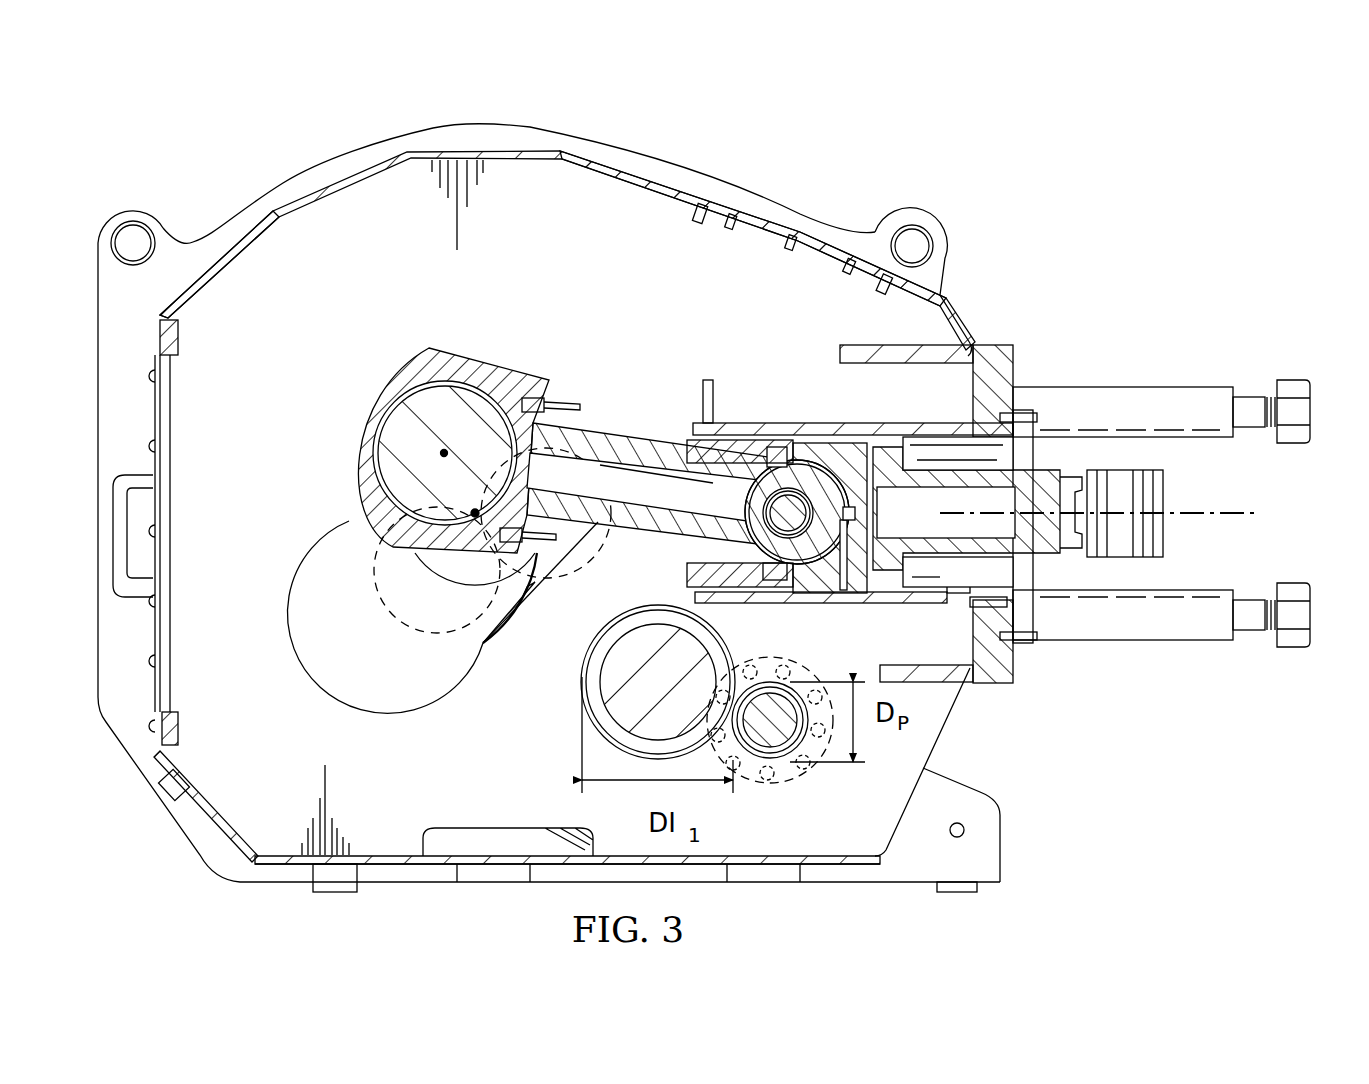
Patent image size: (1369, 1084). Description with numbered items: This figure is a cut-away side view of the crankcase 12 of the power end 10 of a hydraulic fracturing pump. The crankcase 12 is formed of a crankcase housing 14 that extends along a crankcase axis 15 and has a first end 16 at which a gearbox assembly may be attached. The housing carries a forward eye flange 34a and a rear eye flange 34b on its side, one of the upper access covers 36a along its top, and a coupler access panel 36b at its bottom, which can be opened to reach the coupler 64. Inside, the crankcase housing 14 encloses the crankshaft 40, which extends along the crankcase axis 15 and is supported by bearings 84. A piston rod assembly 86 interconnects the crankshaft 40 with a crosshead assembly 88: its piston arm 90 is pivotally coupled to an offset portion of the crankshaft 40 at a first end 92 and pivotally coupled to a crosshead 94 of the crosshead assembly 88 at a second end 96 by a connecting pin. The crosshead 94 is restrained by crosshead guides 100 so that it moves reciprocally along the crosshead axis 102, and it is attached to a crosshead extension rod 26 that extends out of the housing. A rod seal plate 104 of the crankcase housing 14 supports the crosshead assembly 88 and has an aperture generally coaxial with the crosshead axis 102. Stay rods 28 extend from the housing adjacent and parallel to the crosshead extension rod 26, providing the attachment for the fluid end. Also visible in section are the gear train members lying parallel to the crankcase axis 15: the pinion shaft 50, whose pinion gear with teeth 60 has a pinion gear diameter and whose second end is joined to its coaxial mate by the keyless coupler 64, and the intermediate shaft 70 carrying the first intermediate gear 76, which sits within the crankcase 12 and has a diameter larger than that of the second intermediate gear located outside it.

The power end 10 is at (228, 112).
The crankcase 12 is at (347, 168).
The crankcase housing 14 is at (465, 150).
The crankcase axis 15 is at (475, 513).
The first end 16 is at (678, 186).
The crosshead extension rod 26 is at (1168, 490).
The stay rods 28 is at (1148, 386).
The forward eye flange 34a is at (910, 248).
The rear eye flange 34b is at (133, 243).
The upper access cover 36a is at (797, 228).
The coupler access panel 36b is at (975, 743).
The crankshaft 40 is at (352, 603).
The pinion shaft 50 is at (780, 700).
The teeth 60 is at (768, 682).
The coupler 64 is at (805, 782).
The intermediate shaft 70 is at (600, 685).
The first intermediate gear 76 is at (610, 745).
The bearings 84 is at (357, 508).
The piston rod assembly 86 is at (525, 355).
The crosshead assembly 88 is at (788, 418).
The piston arm 90 is at (610, 450).
The first end 92 is at (470, 365).
The crosshead 94 is at (872, 582).
The second end 96 is at (795, 470).
The crosshead guides 100 is at (735, 425).
The crosshead axis 102 is at (1240, 517).
The rod seal plate 104 is at (1012, 372).